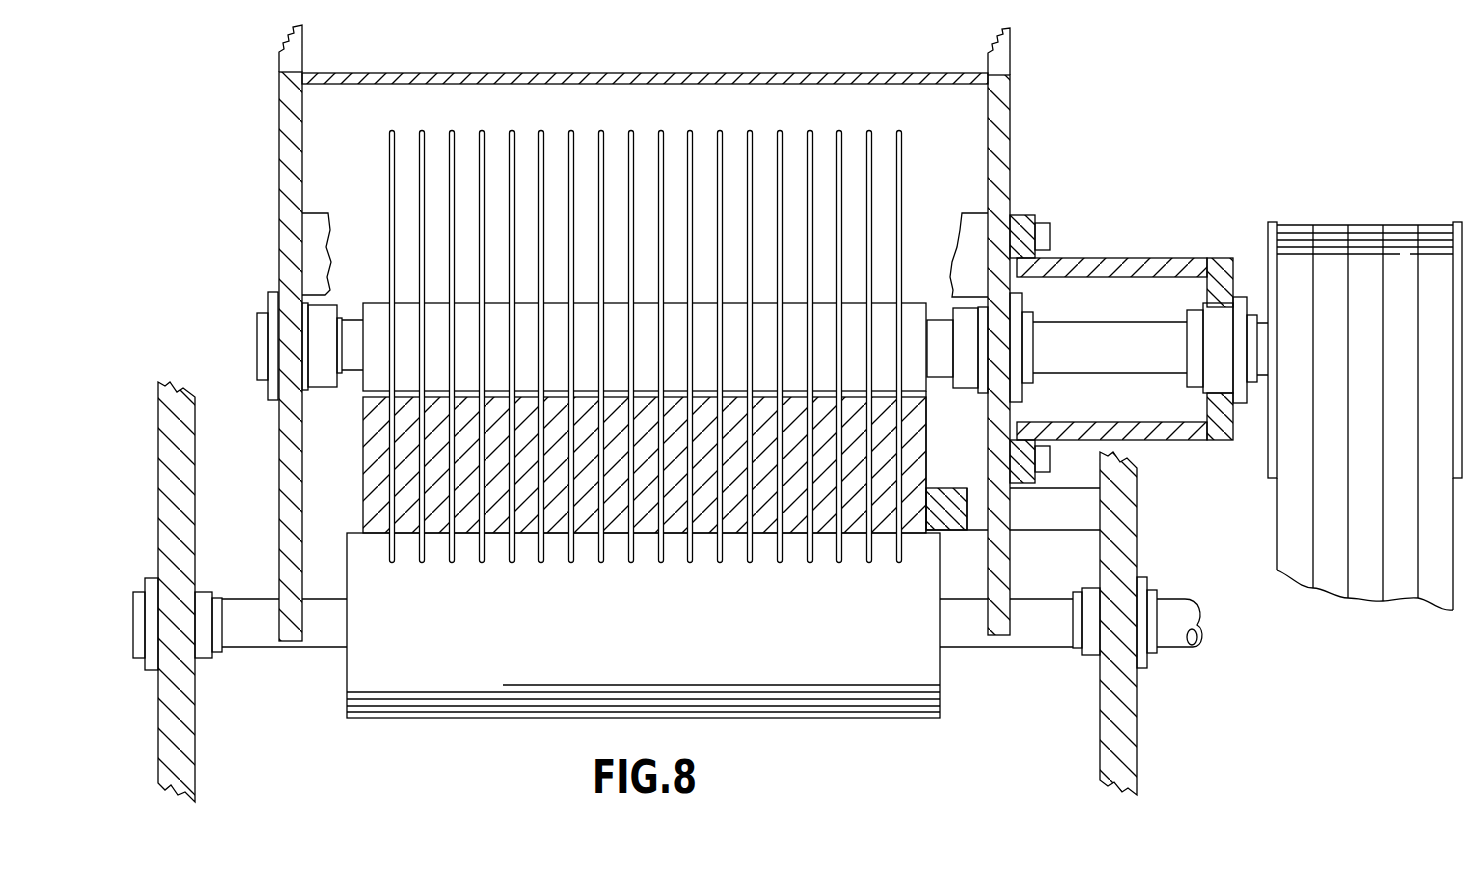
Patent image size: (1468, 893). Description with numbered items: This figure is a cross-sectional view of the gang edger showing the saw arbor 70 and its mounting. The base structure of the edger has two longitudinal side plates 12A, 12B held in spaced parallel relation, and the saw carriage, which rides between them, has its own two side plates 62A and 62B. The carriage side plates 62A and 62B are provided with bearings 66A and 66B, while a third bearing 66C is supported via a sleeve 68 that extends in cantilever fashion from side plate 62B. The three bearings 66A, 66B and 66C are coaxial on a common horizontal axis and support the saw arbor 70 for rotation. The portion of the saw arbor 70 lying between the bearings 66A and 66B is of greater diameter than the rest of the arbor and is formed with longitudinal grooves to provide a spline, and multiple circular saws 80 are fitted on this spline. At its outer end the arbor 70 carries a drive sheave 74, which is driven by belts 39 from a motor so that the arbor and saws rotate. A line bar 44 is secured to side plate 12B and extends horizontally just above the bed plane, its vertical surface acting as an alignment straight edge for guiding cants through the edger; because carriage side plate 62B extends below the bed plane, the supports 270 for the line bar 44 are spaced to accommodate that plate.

The side plate 12A is at (240, 712).
The side plate 12B is at (1137, 718).
The drive belt 39 is at (1276, 530).
The line bar 44 is at (945, 487).
The side plate 62A is at (280, 138).
The side plate 62B is at (1010, 148).
The bearing 66A is at (284, 348).
The bearing 66B is at (1005, 343).
The third bearing 66C is at (1213, 342).
The sleeve 68 is at (1137, 258).
The saw arbor 70 is at (380, 303).
The drive sheave 74 is at (1268, 232).
The circular saws 80 is at (480, 163).
The supports 270 is at (1055, 520).